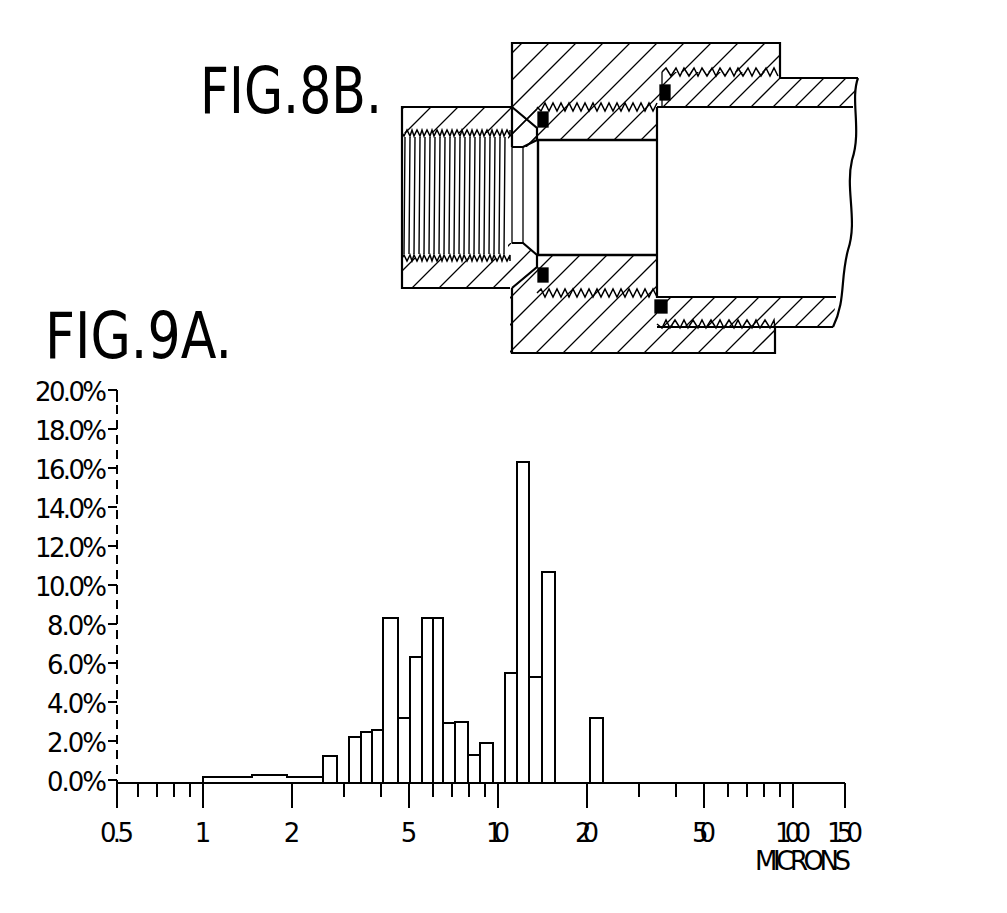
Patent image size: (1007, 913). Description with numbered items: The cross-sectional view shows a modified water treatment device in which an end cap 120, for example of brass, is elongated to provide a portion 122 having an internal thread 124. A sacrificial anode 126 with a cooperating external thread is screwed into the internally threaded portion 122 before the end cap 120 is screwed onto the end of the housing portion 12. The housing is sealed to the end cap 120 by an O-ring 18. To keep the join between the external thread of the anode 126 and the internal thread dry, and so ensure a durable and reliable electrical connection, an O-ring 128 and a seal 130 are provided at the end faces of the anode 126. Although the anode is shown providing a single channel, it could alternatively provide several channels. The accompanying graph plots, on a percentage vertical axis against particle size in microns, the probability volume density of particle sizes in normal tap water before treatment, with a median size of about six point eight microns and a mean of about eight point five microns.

The housing portion 12 is at (795, 80).
The O-ring 18 is at (668, 90).
The end cap 120 is at (530, 53).
The internally threaded portion 122 is at (634, 325).
The internal thread 124 is at (615, 290).
The sacrificial anode 126 is at (578, 282).
The O-ring 128 is at (532, 118).
The seal 130 is at (663, 95).